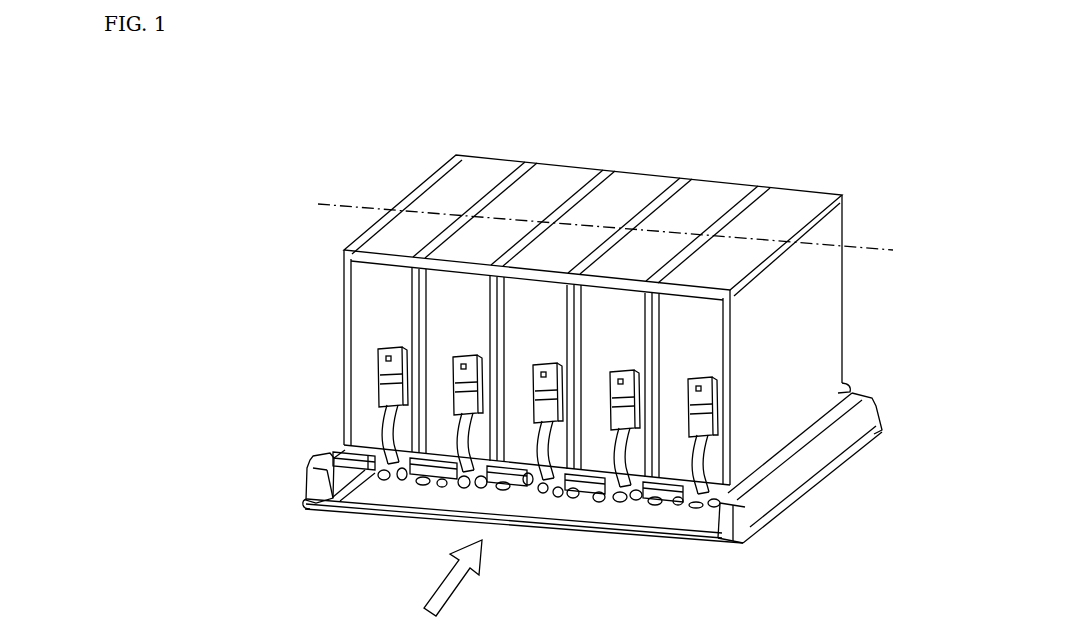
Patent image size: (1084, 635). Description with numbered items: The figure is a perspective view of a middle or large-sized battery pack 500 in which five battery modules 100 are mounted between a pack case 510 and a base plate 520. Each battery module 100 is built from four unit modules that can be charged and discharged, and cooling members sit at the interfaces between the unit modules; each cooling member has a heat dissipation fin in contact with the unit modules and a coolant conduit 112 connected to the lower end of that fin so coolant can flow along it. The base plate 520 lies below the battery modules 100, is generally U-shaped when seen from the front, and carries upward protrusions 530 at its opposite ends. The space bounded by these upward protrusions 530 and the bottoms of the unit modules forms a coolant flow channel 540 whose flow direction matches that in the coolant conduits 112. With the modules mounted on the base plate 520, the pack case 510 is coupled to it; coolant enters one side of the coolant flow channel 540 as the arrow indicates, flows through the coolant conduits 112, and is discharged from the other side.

The middle or large-sized battery pack 500 is at (201, 155).
The battery module 100 is at (370, 310).
The coolant conduit 112 is at (401, 481).
The pack case 510 is at (808, 347).
The base plate 520 is at (285, 487).
The upward protrusion 530 is at (793, 477).
The coolant flow channel 540 is at (587, 528).